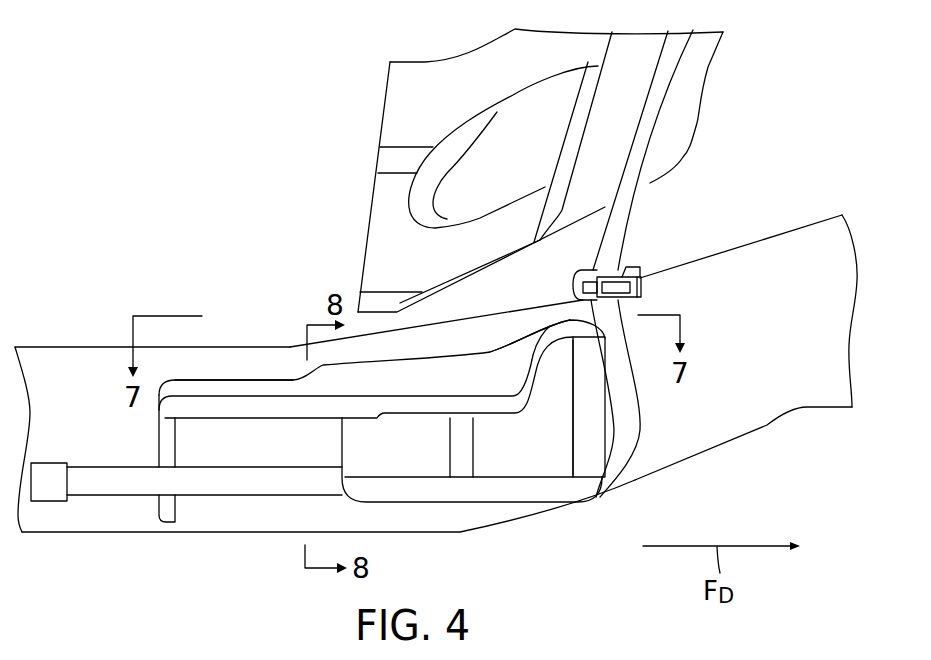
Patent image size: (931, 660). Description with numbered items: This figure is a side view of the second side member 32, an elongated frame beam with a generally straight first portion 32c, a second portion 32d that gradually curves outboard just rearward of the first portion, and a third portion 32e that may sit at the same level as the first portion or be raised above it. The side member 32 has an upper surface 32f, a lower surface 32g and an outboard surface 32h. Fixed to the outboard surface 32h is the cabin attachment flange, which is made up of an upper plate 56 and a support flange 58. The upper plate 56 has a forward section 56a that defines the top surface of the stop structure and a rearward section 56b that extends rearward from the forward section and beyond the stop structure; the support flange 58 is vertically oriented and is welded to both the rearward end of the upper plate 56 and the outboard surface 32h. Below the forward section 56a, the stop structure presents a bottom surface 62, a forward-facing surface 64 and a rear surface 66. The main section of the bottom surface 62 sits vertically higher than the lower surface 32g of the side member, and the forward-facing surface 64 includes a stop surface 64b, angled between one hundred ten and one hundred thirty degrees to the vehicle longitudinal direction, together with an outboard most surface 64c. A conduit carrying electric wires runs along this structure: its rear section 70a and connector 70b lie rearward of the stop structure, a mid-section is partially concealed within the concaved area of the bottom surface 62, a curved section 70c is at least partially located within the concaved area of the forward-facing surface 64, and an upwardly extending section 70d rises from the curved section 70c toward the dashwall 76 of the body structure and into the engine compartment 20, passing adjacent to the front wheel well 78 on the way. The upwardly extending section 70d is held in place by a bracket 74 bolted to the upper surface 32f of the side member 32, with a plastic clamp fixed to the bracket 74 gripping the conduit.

The engine compartment 20 is at (697, 123).
The second side member 32 is at (736, 240).
The first portion 32c is at (810, 213).
The second portion 32d is at (543, 307).
The third portion 32e is at (50, 346).
The upper surface 32f is at (250, 346).
The lower surface 32g is at (418, 532).
The outboard surface 32h is at (758, 385).
The upper plate 56 is at (380, 380).
The forward section 56a is at (498, 377).
The rearward section 56b is at (230, 377).
The support flange 58 is at (167, 443).
The bottom surface 62 is at (495, 502).
The forward-facing surface 64 is at (587, 443).
The stop surface 64b is at (533, 452).
The outboard most surface 64c is at (463, 460).
The rear surface 66 is at (337, 438).
The rear section 70a is at (112, 480).
The connector 70b is at (49, 487).
The curved section 70c is at (623, 420).
The upwardly extending section 70d is at (623, 210).
The bracket 74 is at (628, 267).
The dashwall 76 is at (413, 107).
The front wheel well 78 is at (593, 117).